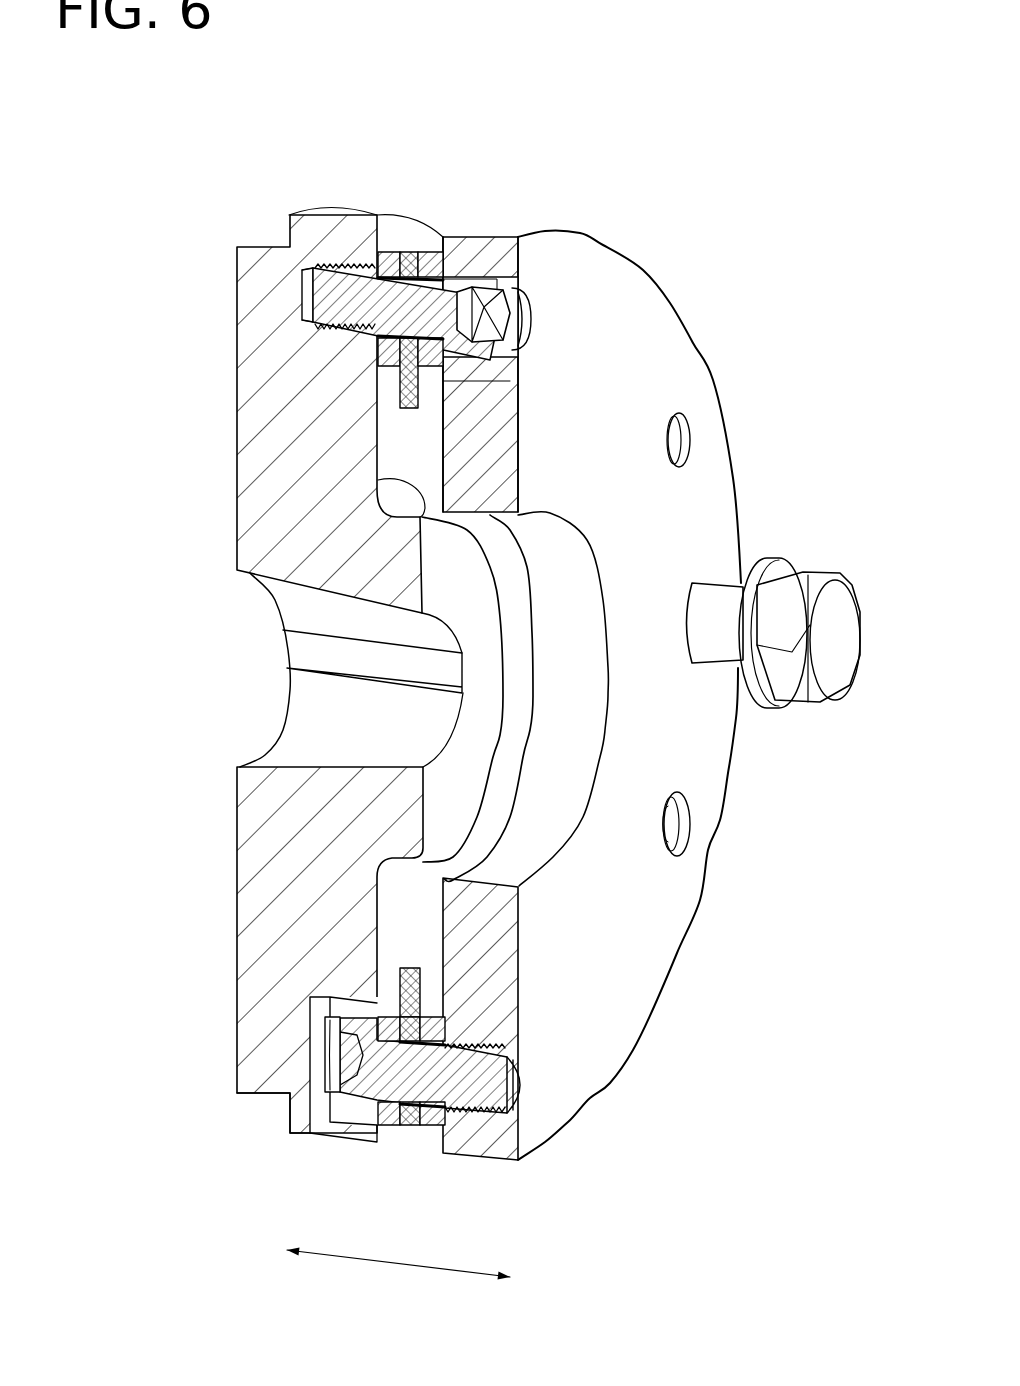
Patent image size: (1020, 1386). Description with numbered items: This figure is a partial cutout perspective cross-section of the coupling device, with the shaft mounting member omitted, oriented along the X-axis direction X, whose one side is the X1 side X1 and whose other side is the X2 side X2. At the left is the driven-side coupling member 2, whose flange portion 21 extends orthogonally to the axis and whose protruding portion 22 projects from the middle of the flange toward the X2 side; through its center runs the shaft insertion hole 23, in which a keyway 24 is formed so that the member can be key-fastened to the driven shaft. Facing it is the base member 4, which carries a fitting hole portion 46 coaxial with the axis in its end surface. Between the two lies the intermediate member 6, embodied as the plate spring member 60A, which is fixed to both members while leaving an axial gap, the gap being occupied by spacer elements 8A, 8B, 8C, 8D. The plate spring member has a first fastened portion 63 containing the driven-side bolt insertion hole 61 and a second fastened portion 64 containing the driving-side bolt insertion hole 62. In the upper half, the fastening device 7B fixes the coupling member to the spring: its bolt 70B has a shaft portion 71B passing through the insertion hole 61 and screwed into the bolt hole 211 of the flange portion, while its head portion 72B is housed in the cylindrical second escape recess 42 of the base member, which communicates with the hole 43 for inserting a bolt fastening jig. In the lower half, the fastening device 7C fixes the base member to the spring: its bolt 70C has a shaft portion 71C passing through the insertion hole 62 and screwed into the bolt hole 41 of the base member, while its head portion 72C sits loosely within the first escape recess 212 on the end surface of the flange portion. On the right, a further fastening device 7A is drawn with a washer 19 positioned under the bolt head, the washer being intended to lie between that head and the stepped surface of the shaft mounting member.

The driven-side coupling member 2 is at (305, 215).
The flange portion 21 is at (330, 213).
The protruding portion 22 is at (393, 482).
The shaft insertion hole 23 is at (252, 574).
The keyway 24 is at (293, 650).
The bolt hole 211 is at (335, 334).
The first escape recess 212 is at (312, 998).
The base member 4 is at (535, 230).
The bolt hole 41 is at (689, 415).
The second escape recess 42 is at (500, 247).
The hole 43 is at (533, 330).
The fitting hole portion 46 is at (562, 848).
The intermediate member 6 is at (411, 252).
The driven-side bolt insertion hole 61 is at (383, 270).
The driving-side bolt insertion hole 62 is at (487, 1125).
The first fastened portion 63 is at (328, 262).
The second fastened portion 64 is at (413, 1103).
The plate spring member 60A is at (413, 1126).
The bolt 7A is at (832, 572).
The fastening device 7B is at (533, 300).
The fastening device 7C is at (320, 1093).
The bolt 70B is at (312, 293).
The bolt 70C is at (330, 1040).
The shaft portion 71B is at (312, 268).
The shaft portion 71C is at (525, 1052).
The head portion 72B is at (523, 373).
The head portion 72C is at (328, 1019).
The washer 8A is at (433, 252).
The washer 8B is at (387, 252).
The washer 8C is at (390, 1126).
The washer 8D is at (428, 1126).
The washer 19 is at (783, 558).
The X-axis direction X is at (393, 1264).
The X1 side X1 is at (263, 1250).
The X2 side X2 is at (533, 1278).